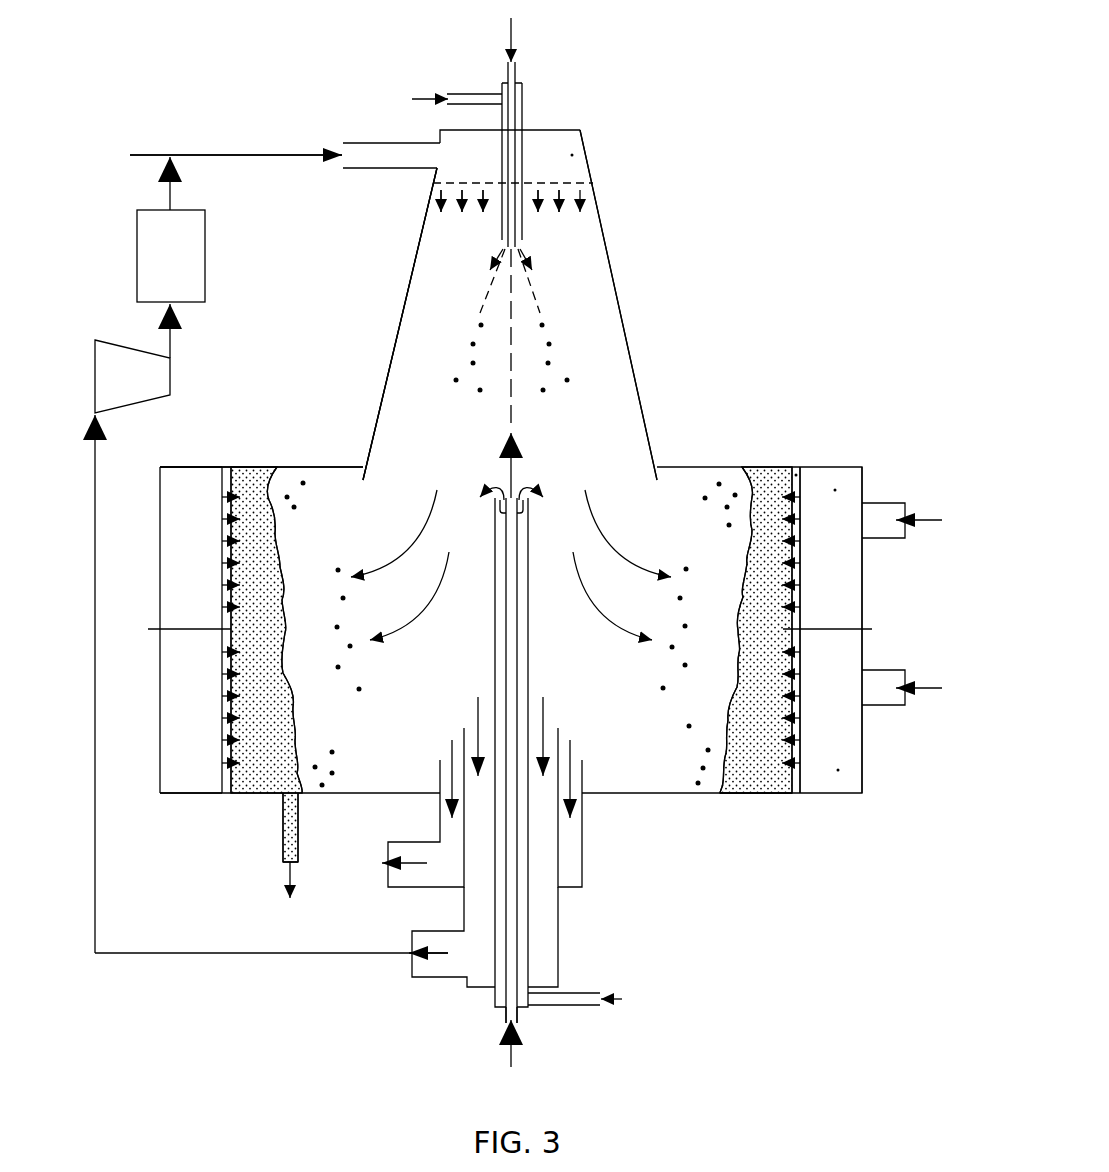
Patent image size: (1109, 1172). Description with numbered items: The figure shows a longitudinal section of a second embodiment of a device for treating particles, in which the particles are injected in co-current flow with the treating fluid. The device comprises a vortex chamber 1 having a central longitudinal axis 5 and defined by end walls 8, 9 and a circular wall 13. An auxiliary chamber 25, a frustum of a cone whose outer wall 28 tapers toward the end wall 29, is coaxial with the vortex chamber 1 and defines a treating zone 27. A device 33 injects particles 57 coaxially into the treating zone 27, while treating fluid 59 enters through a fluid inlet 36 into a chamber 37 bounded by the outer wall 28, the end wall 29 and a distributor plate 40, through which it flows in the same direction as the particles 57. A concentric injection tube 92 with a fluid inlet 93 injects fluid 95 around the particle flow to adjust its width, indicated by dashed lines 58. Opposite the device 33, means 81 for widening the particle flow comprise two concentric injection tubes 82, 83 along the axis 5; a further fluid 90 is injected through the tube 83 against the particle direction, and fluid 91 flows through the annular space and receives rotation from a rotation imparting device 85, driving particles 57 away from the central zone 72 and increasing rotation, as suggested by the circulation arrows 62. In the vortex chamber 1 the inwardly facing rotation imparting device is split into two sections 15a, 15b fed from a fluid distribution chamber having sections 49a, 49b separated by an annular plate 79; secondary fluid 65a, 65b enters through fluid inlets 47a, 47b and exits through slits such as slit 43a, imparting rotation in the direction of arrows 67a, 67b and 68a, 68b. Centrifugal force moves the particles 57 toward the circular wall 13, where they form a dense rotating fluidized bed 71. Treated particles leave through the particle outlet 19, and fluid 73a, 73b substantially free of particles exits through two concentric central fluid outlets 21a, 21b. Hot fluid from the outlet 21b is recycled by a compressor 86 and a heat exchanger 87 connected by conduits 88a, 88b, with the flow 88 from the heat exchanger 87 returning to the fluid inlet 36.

The vortex chamber 1 is at (373, 681).
The central longitudinal axis 5 is at (508, 417).
The end wall 8 is at (728, 795).
The end wall 9 is at (328, 467).
The circular wall 13 is at (233, 478).
The inwardly facing rotation imparting device section 15a is at (866, 479).
The inwardly facing rotation imparting device section 15b is at (866, 782).
The particle outlet 19 is at (282, 835).
The central fluid outlet 21a is at (584, 878).
The central fluid outlet 21b is at (560, 957).
The auxiliary chamber 25 is at (399, 316).
The treating zone 27 is at (408, 388).
The outer wall 28 is at (390, 350).
The end wall 29 is at (585, 130).
The device for injecting particles 33 is at (517, 72).
The fluid inlet 36 is at (392, 170).
The chamber 37 is at (572, 155).
The distributor plate 40 is at (586, 183).
The slit 43a is at (796, 474).
The fluid inlet 47a is at (880, 540).
The fluid inlet 47b is at (880, 707).
The fluid distribution chamber section 49a is at (211, 566).
The fluid distribution chamber section 49b is at (838, 822).
The particles 57 is at (514, 24).
The dashed lines 58 is at (490, 296).
The treating fluid 59 is at (307, 157).
The gas circulation 62 is at (618, 545).
The secondary fluid 65a is at (931, 523).
The secondary fluid 65b is at (931, 691).
The arrows 67a is at (775, 482).
The arrows 67b is at (774, 770).
The arrows 68a is at (222, 592).
The arrows 68b is at (222, 660).
The dense rotating fluidized bed 71 is at (270, 701).
The central zone 72 is at (580, 533).
The fluid 73a is at (451, 746).
The fluid 73b is at (477, 699).
The annular plate 79 is at (825, 631).
The means for widening the flow of particles 81 is at (493, 624).
The injection tube 82 is at (494, 666).
The injection tube 83 is at (519, 1021).
The rotation imparting device 85 is at (499, 506).
The compressor 86 is at (147, 391).
The heat exchanger 87 is at (185, 269).
The recycle gas line 88 is at (169, 193).
The conduit 88a is at (194, 956).
The conduit 88b is at (172, 342).
The further fluid 90 is at (515, 466).
The fluid 91 is at (494, 484).
The concentric injection tube 92 is at (524, 98).
The fluid inlet 93 is at (474, 93).
The fluid 95 is at (428, 96).